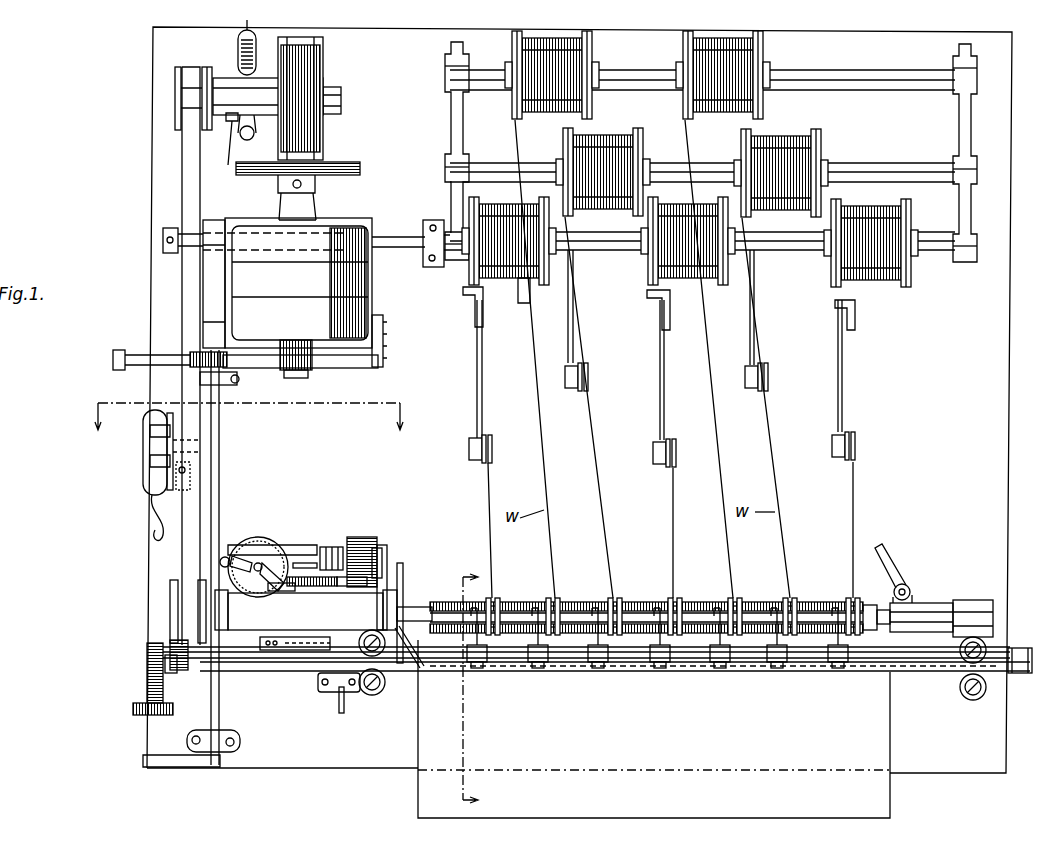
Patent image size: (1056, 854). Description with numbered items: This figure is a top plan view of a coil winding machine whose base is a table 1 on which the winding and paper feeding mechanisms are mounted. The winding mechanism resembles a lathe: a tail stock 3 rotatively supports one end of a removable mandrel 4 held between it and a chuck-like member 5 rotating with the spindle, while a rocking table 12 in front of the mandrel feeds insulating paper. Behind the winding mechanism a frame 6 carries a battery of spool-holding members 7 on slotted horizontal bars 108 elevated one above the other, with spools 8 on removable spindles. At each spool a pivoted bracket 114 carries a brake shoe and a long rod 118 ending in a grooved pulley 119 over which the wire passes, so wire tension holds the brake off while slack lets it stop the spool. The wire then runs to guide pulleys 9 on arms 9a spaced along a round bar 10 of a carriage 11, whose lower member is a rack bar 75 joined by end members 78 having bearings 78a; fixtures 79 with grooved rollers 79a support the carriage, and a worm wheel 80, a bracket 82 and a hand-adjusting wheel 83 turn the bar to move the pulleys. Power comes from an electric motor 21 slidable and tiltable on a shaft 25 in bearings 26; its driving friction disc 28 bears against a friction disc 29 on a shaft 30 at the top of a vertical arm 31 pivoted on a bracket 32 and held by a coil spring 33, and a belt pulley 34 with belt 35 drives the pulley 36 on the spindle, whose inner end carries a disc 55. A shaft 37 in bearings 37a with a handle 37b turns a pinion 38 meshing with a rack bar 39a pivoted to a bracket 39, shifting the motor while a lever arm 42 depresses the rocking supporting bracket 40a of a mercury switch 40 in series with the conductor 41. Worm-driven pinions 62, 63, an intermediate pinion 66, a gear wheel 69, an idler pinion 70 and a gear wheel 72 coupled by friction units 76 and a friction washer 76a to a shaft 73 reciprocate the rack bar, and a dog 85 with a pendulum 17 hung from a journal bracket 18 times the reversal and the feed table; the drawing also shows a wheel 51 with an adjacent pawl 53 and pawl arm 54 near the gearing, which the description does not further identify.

The table 1 is at (165, 165).
The tail stock 3 is at (930, 596).
The mandrel 4 is at (870, 604).
The chuck-like member 5 is at (408, 606).
The frame 6 is at (439, 120).
The spool-holding members 7 is at (828, 162).
The spools 8 is at (680, 52).
The guide pulleys 9 is at (492, 598).
The arms 9a is at (538, 640).
The round bar 10 is at (277, 673).
The carriage 11 is at (586, 684).
The rocking table 12 is at (418, 798).
The pendulum 17 is at (341, 713).
The journal bracket 18 is at (330, 692).
The electric motor 21 is at (335, 240).
The shaft 25 is at (162, 240).
The bearings 26 is at (165, 255).
The driving friction disc 28 is at (355, 165).
The friction disc 29 is at (322, 68).
The shaft 30 is at (343, 95).
The vertical arm 31 is at (228, 168).
The bracket 32 is at (246, 140).
The coil spring 33 is at (240, 55).
The belt pulley 34 is at (176, 104).
The belt 35 is at (188, 200).
The pulley 36 is at (170, 600).
The shaft 37 is at (214, 718).
The bearings 37a is at (220, 386).
The handle 37b is at (162, 768).
The pinion 38 is at (228, 362).
The bracket 39 is at (384, 340).
The rack bar 39a is at (352, 368).
The mercury switch 40 is at (145, 455).
The rocking supporting bracket 40a is at (176, 470).
The conductor 41 is at (152, 525).
The lever arm 42 is at (152, 441).
The gear wheel 51 is at (262, 545).
The pawl 53 is at (240, 555).
The pawl arm 54 is at (272, 565).
The disc 55 is at (422, 668).
The pinion 62 is at (350, 587).
The pinion 63 is at (288, 592).
The intermediate pinion 66 is at (312, 587).
The gear wheel 69 is at (306, 563).
The idler pinion 70 is at (332, 547).
The gear wheel 72 is at (388, 550).
The shaft 73 is at (405, 572).
The rack bar 75 is at (240, 660).
The friction units 76 is at (362, 537).
The friction washer 76a is at (380, 548).
The end members 78 is at (1018, 647).
The bearings 78a is at (183, 673).
The fixtures 79 is at (956, 668).
The grooved rollers 79a is at (978, 702).
The worm wheel 80 is at (170, 655).
The bracket 82 is at (147, 682).
The hand-adjusting wheel 83 is at (133, 710).
The dog 85 is at (295, 652).
The slotted horizontal bars 108 is at (920, 91).
The bracket 114 is at (484, 322).
The rod 118 is at (477, 396).
The grooved pulley 119 is at (492, 452).